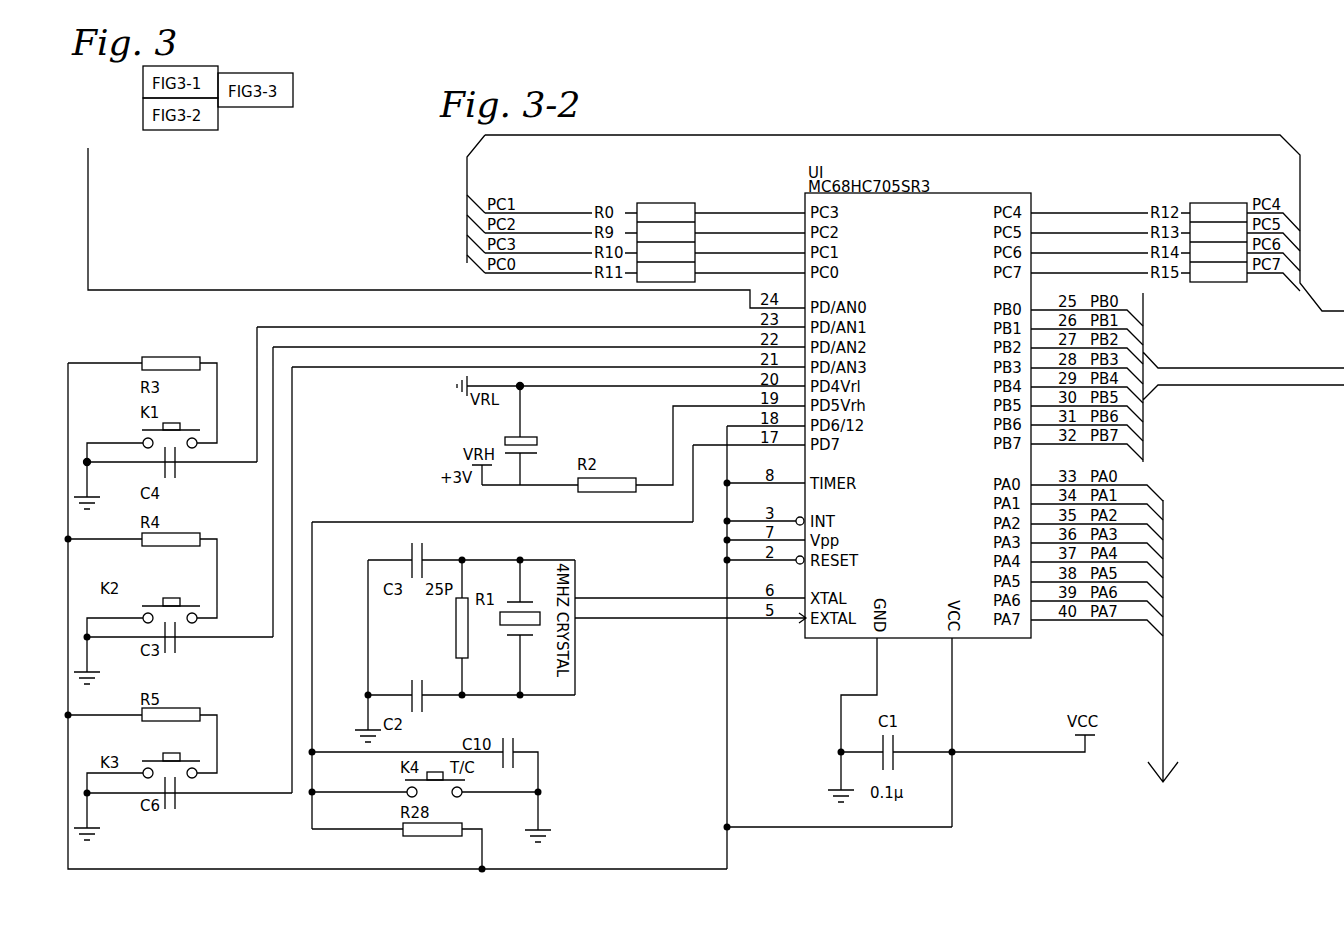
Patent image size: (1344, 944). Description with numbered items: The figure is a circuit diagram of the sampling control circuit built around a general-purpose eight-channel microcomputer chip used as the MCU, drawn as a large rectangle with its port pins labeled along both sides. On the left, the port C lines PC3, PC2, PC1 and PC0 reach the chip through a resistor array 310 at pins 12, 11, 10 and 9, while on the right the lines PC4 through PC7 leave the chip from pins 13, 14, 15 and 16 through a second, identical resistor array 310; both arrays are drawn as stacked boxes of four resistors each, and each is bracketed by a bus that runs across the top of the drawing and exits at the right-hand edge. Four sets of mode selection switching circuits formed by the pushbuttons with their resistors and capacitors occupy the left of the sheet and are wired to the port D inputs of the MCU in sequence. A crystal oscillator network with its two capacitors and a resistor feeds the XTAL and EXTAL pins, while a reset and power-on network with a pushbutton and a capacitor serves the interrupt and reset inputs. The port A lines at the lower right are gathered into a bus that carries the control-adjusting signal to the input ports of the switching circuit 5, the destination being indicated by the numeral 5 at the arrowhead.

The resistor array 310 is at (660, 203).
The switching circuit 5 is at (1104, 650).
The PC3 pin connection 12 is at (750, 205).
The PC2 pin connection 11 is at (750, 225).
The PC1 pin connection 10 is at (750, 245).
The PC0 pin connection 9 is at (750, 265).
The PC4 pin connection 13 is at (1110, 205).
The PC5 pin connection 14 is at (1110, 225).
The PC6 pin connection 15 is at (1110, 245).
The PC7 pin connection 16 is at (1110, 265).